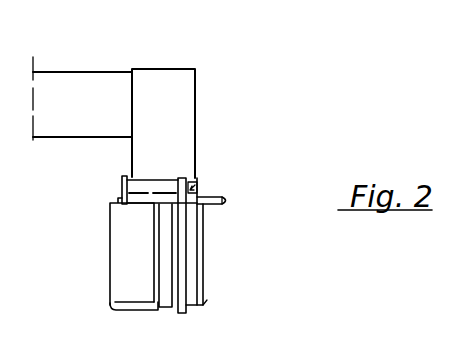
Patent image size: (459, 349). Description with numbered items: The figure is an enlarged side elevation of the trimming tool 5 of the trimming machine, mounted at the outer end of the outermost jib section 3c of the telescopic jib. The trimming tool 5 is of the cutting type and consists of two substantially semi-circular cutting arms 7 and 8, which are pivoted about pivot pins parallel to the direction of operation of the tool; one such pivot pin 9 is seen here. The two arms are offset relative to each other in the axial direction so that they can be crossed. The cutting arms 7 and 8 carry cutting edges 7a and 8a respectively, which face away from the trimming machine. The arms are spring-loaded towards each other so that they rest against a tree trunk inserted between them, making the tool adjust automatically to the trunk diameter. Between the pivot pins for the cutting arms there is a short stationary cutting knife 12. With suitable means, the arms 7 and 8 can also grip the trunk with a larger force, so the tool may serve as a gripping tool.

The outermost jib section 3c is at (86, 95).
The pivot pin 9 is at (203, 185).
The stationary cutting knife 12 is at (227, 199).
The cutting arm 7 is at (197, 306).
The cutting edge 7a is at (209, 277).
The cutting edge 8a is at (150, 279).
The cutting arm 8 is at (113, 297).
The trimming tool 5 is at (62, 306).